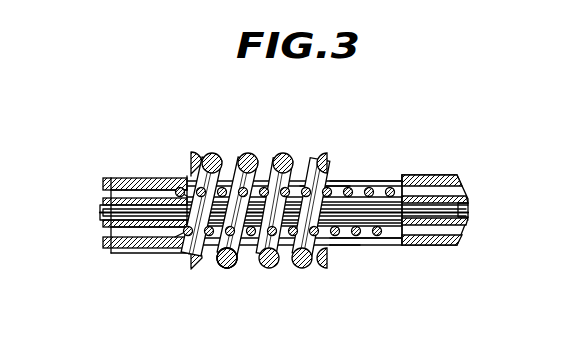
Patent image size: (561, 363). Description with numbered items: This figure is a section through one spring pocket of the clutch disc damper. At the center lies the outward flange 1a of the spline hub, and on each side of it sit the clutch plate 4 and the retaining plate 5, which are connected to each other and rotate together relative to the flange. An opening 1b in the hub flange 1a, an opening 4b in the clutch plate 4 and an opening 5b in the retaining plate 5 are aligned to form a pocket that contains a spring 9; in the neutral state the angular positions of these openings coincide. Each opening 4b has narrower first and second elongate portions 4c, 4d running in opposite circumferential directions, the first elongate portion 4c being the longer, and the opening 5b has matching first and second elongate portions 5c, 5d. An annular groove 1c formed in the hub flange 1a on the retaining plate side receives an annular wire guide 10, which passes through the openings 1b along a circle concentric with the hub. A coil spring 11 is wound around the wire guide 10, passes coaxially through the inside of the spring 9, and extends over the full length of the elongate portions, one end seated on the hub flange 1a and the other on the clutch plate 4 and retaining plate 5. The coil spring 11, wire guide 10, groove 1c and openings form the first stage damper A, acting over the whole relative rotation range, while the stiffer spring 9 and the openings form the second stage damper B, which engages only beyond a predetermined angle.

The outward flange 1a is at (461, 190).
The opening 1b is at (350, 250).
The annular groove 1c is at (466, 206).
The clutch plate 4 is at (440, 175).
The opening 4b is at (267, 153).
The first elongate portion 4c is at (387, 183).
The second elongate portion 4d is at (182, 162).
The retaining plate 5 is at (443, 247).
The opening 5b is at (214, 267).
The first elongate portion 5c is at (388, 240).
The second elongate portion 5d is at (183, 248).
The spring 9 is at (280, 272).
The annular wire guide 10 is at (103, 216).
The coil spring 11 is at (343, 182).
The first stage damper A is at (341, 252).
The second stage damper B is at (236, 275).